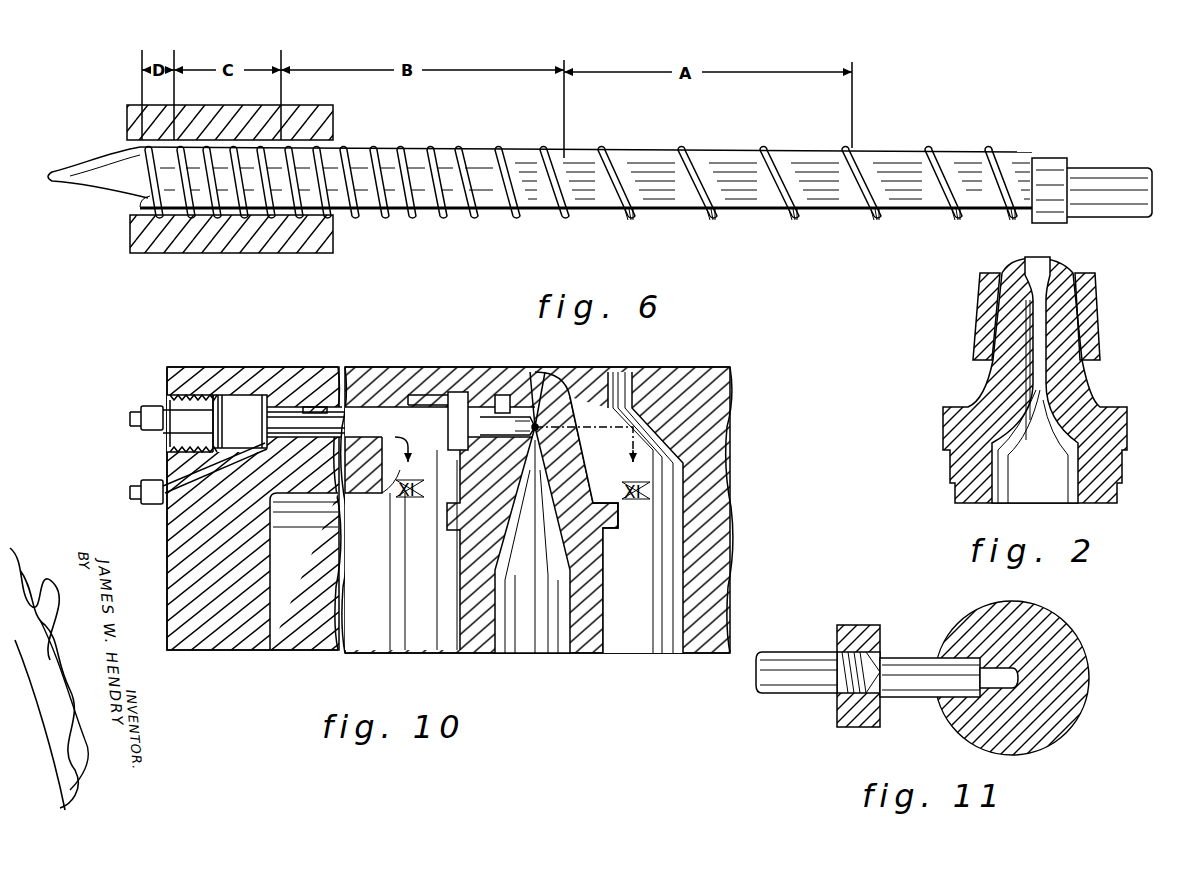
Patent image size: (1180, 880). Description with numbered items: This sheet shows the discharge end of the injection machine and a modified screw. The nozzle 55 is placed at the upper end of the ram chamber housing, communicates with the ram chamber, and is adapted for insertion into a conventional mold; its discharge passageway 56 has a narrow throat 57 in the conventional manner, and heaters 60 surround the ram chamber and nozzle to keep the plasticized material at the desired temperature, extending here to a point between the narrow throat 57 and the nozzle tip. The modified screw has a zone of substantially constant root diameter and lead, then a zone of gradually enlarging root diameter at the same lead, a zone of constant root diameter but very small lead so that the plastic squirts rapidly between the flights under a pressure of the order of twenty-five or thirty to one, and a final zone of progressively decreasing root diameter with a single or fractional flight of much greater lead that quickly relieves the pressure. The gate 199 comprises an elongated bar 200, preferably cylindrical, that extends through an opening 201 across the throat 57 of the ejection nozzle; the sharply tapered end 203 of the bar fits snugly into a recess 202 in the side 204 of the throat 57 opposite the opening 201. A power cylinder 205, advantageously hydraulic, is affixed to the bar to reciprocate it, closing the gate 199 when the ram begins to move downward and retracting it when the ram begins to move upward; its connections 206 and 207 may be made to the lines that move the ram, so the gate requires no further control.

In FIG. 2, the nozzle 55 is at (993, 395).
In FIG. 2, the discharge passageway 56 is at (1002, 447).
In FIG. 10, the narrow throat 57 is at (532, 540).
In FIG. 2, the narrow throat 57 is at (1030, 288).
In FIG. 11, the narrow throat 57 is at (950, 733).
In FIG. 2, the heaters 60 is at (1088, 330).
In FIG. 10, the gate 199 is at (540, 420).
In FIG. 10, the elongated bar 200 is at (533, 425).
In FIG. 11, the elongated bar 200 is at (995, 670).
In FIG. 10, the opening 201 is at (485, 463).
In FIG. 10, the recess 202 is at (540, 428).
In FIG. 11, the recess 202 is at (1018, 678).
In FIG. 10, the end of bar 203 is at (544, 399).
In FIG. 10, the side of throat 204 is at (535, 427).
In FIG. 10, the power cylinder 205 is at (274, 387).
In FIG. 10, the connection 206 is at (150, 410).
In FIG. 10, the connection 207 is at (140, 491).